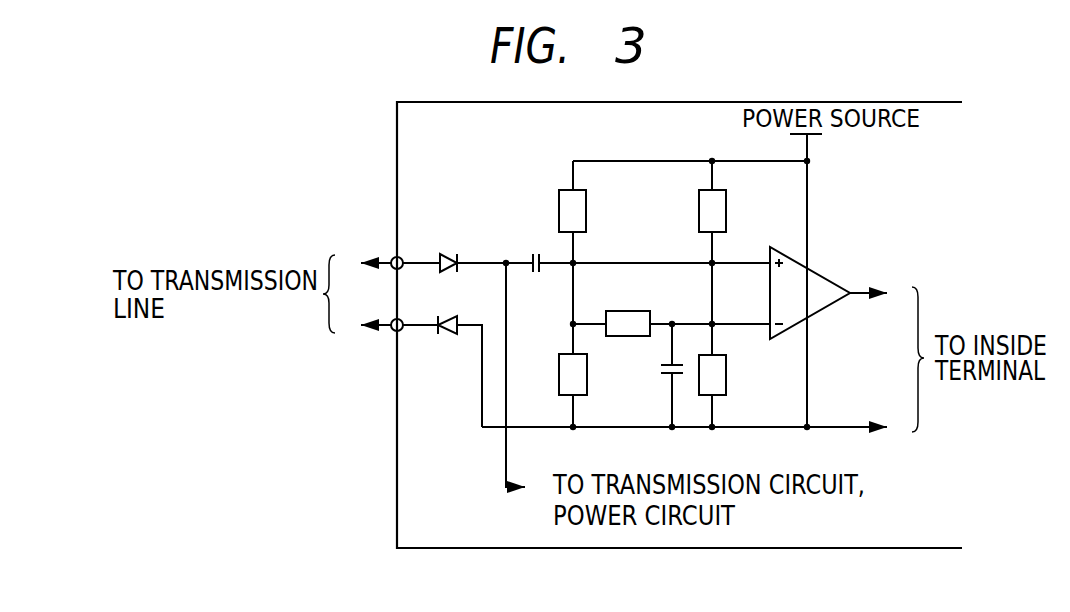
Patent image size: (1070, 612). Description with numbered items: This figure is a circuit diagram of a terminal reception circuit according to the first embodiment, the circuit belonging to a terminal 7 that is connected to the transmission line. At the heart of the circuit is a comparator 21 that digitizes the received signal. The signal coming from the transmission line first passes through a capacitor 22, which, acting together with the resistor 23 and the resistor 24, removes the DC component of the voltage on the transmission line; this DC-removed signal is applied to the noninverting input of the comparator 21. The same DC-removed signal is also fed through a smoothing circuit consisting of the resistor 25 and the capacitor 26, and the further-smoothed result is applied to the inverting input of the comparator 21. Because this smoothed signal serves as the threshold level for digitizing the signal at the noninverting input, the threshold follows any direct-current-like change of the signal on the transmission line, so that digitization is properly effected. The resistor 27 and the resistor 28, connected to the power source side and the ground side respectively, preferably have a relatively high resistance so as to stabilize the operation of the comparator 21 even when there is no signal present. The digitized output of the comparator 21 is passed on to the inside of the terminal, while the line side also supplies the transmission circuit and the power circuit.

The terminal 7 is at (397, 152).
The comparator 21 is at (818, 274).
The capacitor 22 is at (531, 257).
The resistor 23 is at (587, 211).
The resistor 24 is at (565, 352).
The resistor 25 is at (637, 311).
The capacitor 26 is at (662, 367).
The resistor 27 is at (726, 211).
The resistor 28 is at (728, 372).